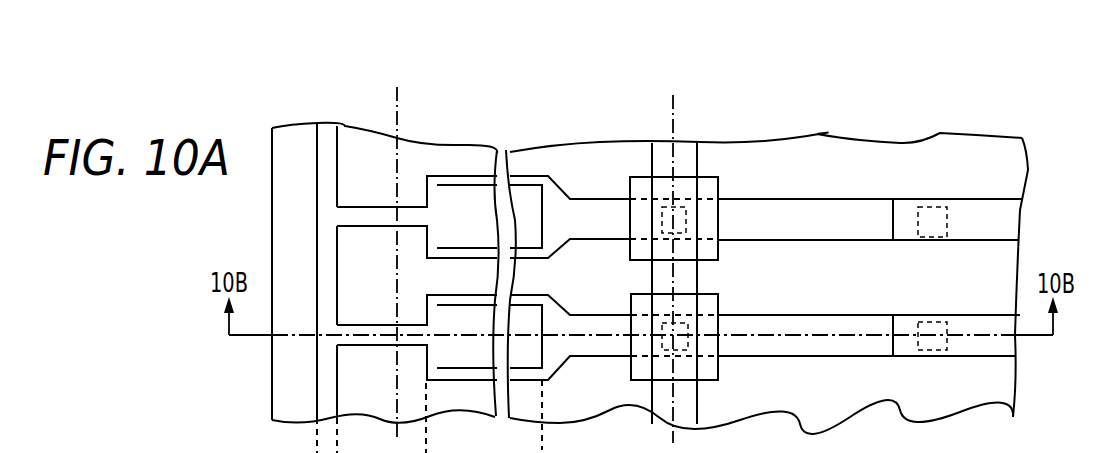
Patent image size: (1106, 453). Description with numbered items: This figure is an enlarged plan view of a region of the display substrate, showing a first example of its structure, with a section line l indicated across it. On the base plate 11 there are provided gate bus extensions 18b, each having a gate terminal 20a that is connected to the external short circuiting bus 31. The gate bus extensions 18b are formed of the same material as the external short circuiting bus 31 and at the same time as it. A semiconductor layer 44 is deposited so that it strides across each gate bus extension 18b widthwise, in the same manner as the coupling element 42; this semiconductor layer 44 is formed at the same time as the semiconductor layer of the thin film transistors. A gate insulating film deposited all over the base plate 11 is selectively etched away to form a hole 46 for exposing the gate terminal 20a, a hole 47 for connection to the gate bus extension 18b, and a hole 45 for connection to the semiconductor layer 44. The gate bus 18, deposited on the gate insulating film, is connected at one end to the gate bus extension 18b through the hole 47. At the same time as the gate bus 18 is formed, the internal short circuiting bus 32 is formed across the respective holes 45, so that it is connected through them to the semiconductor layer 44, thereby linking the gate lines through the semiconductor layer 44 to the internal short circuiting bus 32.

The base plate 11 is at (273, 128).
The gate bus 18 is at (972, 205).
The gate bus extension 18b is at (862, 241).
The gate terminal 20a is at (483, 255).
The external short circuiting bus 31 is at (328, 128).
The internal short circuiting bus 32 is at (685, 150).
The axis line l is at (398, 140).
The coupling element 42 is at (738, 370).
The semiconductor layer 44 is at (720, 183).
The hole 45 is at (690, 216).
The hole 46 is at (540, 202).
The hole 47 is at (940, 226).